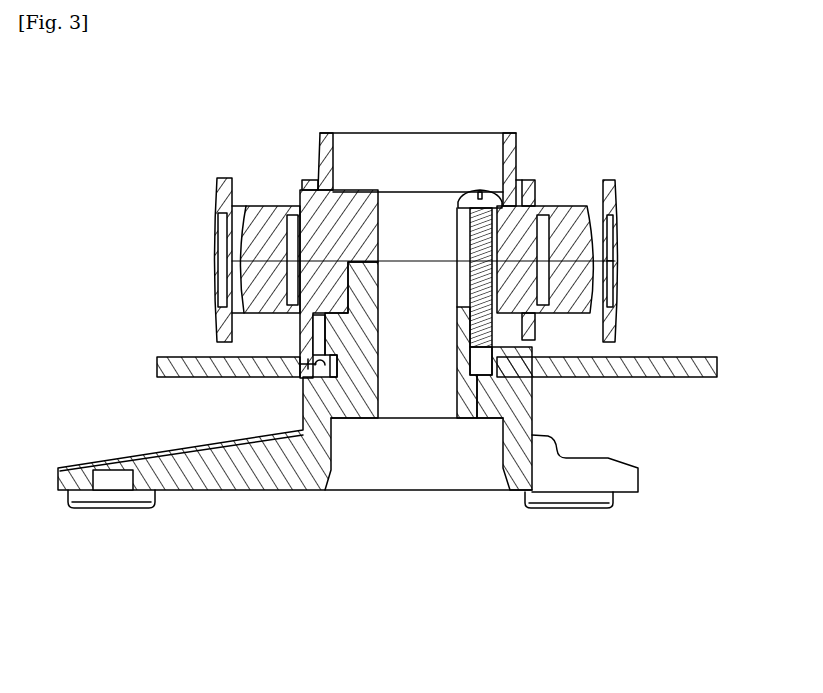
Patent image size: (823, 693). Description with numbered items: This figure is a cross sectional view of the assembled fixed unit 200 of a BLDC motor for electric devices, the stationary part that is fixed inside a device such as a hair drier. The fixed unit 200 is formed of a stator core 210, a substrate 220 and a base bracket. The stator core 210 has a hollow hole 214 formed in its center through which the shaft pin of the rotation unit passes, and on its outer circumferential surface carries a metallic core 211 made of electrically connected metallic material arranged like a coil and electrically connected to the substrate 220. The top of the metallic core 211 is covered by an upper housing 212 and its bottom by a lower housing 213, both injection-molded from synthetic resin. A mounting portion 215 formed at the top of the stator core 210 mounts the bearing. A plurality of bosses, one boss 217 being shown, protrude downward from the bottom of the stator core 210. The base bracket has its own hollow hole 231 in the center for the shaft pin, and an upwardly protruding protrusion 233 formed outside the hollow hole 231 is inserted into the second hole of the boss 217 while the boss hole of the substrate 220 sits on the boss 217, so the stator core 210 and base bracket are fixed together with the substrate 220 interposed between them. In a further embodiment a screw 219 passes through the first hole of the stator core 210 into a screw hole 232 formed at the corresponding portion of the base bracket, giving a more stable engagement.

The fixed unit 200 is at (88, 627).
The stator core 210 is at (200, 183).
The metallic core 211 is at (615, 259).
The upper housing 212 is at (615, 217).
The lower housing 213 is at (607, 293).
The hollow hole 214 is at (378, 223).
The mounting portion 215 is at (336, 157).
The boss 217 is at (312, 339).
The screw 219 is at (478, 190).
The substrate 220 is at (683, 375).
The hollow hole 231 is at (377, 402).
The screw hole 232 is at (482, 377).
The protrusion 233 is at (308, 362).